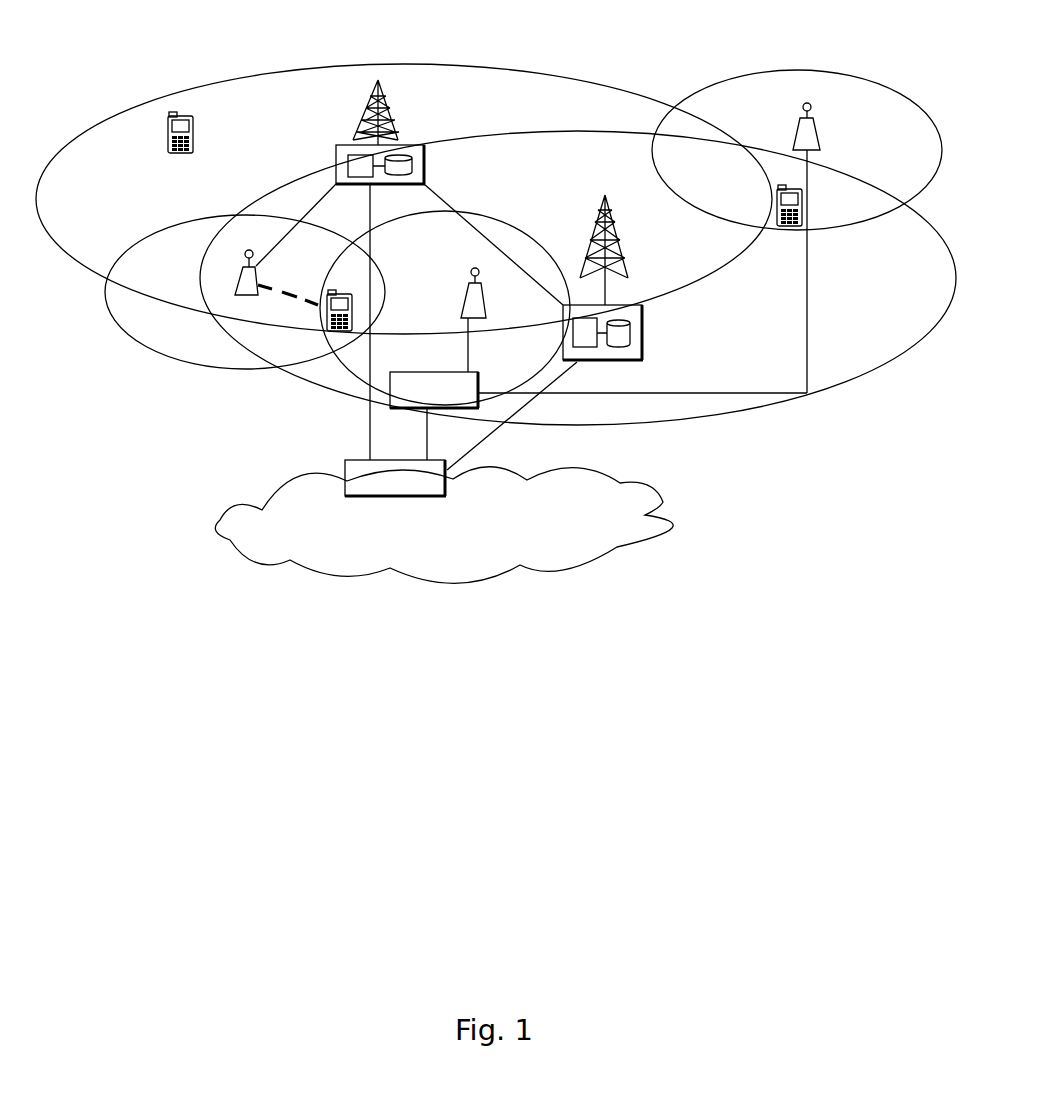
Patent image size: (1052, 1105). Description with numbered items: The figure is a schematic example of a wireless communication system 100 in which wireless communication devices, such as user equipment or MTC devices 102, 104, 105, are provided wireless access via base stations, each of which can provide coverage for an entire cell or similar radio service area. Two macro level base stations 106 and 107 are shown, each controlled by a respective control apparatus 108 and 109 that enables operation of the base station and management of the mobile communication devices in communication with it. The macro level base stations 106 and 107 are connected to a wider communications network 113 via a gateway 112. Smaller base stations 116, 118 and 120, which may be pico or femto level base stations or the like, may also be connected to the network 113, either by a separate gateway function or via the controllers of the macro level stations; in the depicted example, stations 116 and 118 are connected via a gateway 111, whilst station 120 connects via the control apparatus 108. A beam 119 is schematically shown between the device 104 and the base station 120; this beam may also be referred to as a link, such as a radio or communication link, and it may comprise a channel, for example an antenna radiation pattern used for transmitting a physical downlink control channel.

The wireless communication system 100 is at (112, 102).
The wireless communication device 102 is at (170, 143).
The wireless communication device 104 is at (327, 313).
The wireless communication device 105 is at (790, 230).
The macro level base station 106 is at (363, 120).
The macro level base station 107 is at (616, 252).
The control apparatus 108 is at (335, 157).
The control apparatus 109 is at (633, 352).
The gateway 111 is at (390, 393).
The gateway 112 is at (347, 459).
The wider communications network 113 is at (288, 505).
The smaller base station 116 is at (797, 128).
The smaller base station 118 is at (478, 307).
The beam 119 is at (290, 302).
The smaller base station 120 is at (240, 277).